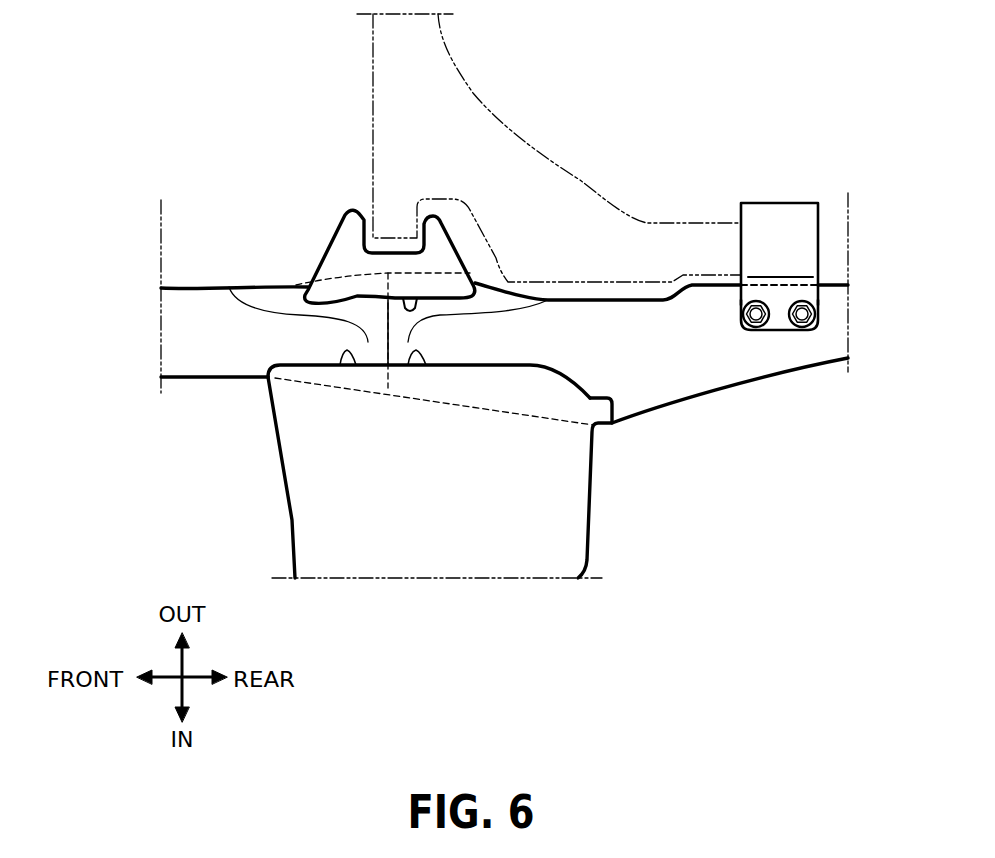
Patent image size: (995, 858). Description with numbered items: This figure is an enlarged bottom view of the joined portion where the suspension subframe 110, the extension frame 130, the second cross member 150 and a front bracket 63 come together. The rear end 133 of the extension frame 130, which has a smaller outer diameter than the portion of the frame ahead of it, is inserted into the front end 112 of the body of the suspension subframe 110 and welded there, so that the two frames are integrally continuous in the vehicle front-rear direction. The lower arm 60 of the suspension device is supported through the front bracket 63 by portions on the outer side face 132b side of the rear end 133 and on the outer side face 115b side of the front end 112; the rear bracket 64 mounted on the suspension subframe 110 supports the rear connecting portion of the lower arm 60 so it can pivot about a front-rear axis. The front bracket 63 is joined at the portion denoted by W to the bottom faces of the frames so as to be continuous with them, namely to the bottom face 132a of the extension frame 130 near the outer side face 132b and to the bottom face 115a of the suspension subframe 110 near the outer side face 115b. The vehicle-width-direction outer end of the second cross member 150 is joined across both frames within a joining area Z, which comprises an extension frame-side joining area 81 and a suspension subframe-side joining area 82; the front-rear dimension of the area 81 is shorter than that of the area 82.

The lower arm 60 is at (470, 80).
The front bracket 63 is at (323, 242).
The rear bracket 64 is at (790, 203).
The extension frame-side joining area 81 is at (356, 365).
The suspension subframe-side joining area 82 is at (426, 365).
The suspension subframe 110 is at (691, 402).
The front end 112 is at (550, 300).
The bottom face 115a is at (607, 355).
The outer side face 115b is at (490, 280).
The extension frame 130 is at (231, 281).
The bottom face 132a is at (207, 348).
The outer side face 132b is at (292, 284).
The rear end 133 is at (230, 288).
The second cross member 150 is at (293, 521).
The joined portion W is at (415, 305).
The joining area Z is at (332, 438).